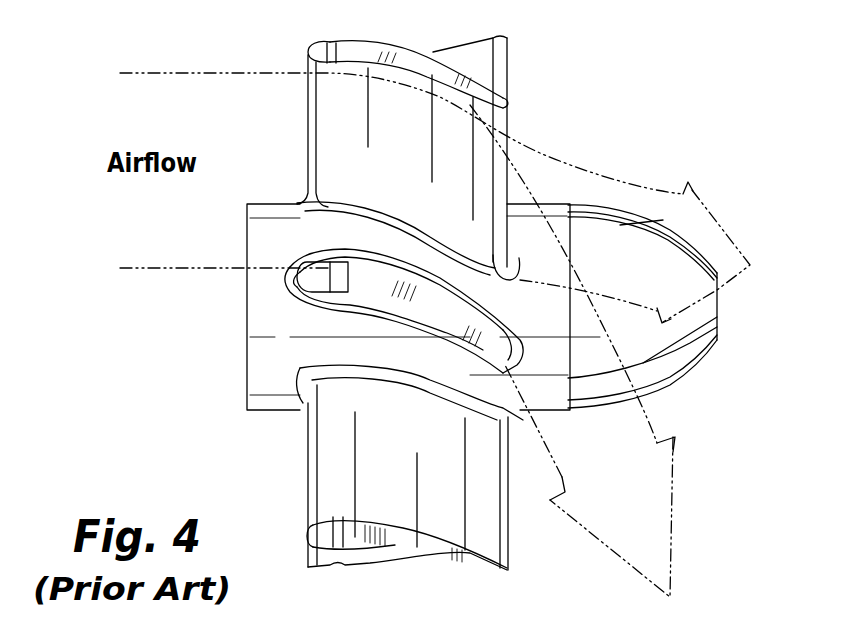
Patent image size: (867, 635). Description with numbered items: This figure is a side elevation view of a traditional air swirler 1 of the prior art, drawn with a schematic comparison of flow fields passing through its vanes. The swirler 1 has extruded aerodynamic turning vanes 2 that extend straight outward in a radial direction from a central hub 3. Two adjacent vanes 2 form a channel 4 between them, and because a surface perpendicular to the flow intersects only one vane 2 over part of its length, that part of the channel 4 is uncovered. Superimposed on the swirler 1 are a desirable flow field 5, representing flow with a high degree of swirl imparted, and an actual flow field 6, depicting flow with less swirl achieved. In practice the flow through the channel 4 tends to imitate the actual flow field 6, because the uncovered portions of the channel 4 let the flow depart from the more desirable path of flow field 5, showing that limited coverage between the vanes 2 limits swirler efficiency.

The traditional air swirler 1 is at (175, 395).
The turning vane 2 is at (412, 64).
The central hub 3 is at (682, 352).
The channel 4 is at (372, 238).
The desirable flow field 5 is at (557, 479).
The actual flow field 6 is at (641, 174).